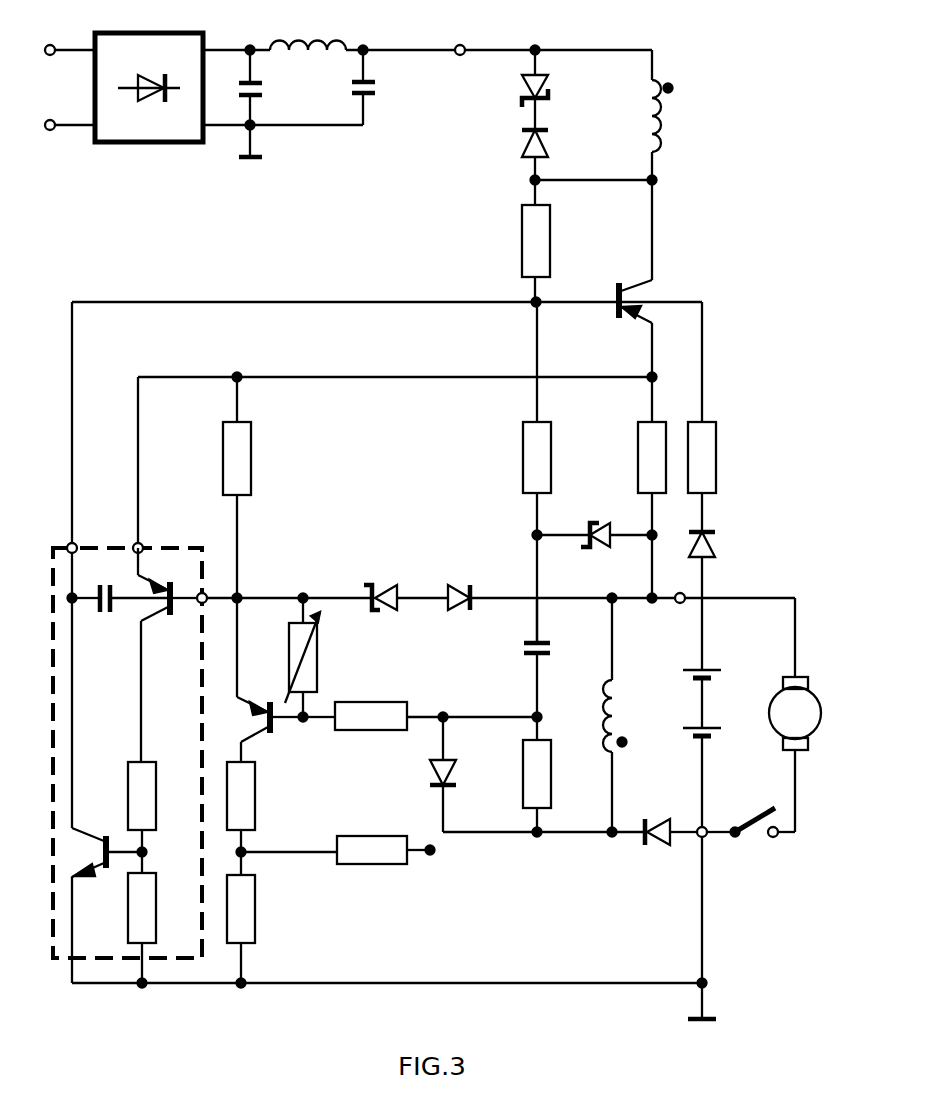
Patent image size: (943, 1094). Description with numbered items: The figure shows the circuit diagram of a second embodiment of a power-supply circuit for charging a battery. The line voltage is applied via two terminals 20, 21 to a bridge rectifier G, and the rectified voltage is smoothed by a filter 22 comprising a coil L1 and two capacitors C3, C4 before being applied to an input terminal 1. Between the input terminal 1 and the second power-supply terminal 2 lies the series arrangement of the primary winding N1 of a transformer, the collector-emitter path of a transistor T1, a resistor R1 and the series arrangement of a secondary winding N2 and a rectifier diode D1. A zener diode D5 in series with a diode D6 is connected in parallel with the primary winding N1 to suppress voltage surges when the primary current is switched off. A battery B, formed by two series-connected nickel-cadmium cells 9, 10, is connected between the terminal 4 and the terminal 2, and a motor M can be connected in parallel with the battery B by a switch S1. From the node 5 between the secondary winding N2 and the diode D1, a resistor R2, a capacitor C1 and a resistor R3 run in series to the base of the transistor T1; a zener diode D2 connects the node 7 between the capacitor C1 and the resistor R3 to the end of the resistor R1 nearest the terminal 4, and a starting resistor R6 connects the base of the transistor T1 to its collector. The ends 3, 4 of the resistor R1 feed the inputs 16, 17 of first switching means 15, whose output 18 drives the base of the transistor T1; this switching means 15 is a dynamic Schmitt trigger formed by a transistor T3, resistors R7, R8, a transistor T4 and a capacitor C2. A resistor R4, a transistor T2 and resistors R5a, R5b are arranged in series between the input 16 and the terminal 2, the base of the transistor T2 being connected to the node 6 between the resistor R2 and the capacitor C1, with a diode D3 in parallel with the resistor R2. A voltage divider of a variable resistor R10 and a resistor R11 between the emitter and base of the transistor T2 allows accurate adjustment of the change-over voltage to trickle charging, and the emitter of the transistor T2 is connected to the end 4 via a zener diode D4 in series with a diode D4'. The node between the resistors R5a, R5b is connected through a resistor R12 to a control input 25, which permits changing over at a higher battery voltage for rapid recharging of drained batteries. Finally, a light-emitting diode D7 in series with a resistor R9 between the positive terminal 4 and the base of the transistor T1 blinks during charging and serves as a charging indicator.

The terminal 20 is at (52, 45).
The terminal 21 is at (52, 120).
The bridge rectifier G is at (143, 143).
The filter 22 is at (332, 81).
The capacitor C3 is at (240, 90).
The coil L1 is at (302, 44).
The capacitor C4 is at (352, 88).
The input terminal 1 is at (460, 45).
The zener diode D5 is at (519, 90).
The diode D6 is at (519, 141).
The primary winding N1 is at (661, 115).
The starting resistor R6 is at (551, 240).
The transistor T1 is at (621, 284).
The end of resistor R1 3 is at (657, 374).
The resistor R4 is at (252, 456).
The resistor R3 is at (552, 456).
The resistor R1 is at (636, 433).
The resistor R9 is at (717, 456).
The zener diode D2 is at (598, 521).
The node 7 is at (541, 539).
The light-emitting diode D7 is at (716, 543).
The first switching means 15 is at (62, 965).
The output 18 is at (75, 543).
The input 16 is at (141, 543).
The input 17 is at (212, 586).
The capacitor C2 is at (108, 614).
The transistor T3 is at (170, 617).
The resistor R7 is at (127, 774).
The transistor T4 is at (106, 834).
The resistor R8 is at (127, 907).
The transistor T2 is at (272, 703).
The resistor R5a is at (256, 791).
The resistor R5b is at (256, 910).
The variable resistor R10 is at (318, 650).
The resistor R11 is at (370, 731).
The diode D3 is at (430, 773).
The resistor R12 is at (376, 865).
The control input 25 is at (433, 855).
The zener diode D4 is at (375, 584).
The diode D4' is at (489, 584).
The terminal 4 is at (680, 604).
The capacitor C1 is at (551, 647).
The node 6 is at (534, 713).
The resistor R2 is at (522, 776).
The secondary winding N2 is at (602, 715).
The node 5 is at (612, 837).
The rectifier diode D1 is at (662, 818).
The terminal 2 is at (707, 836).
The switch S1 is at (754, 824).
The battery B is at (712, 744).
The nickel-cadmium cell 9 is at (721, 672).
The nickel-cadmium cell 10 is at (721, 732).
The motor M is at (785, 676).